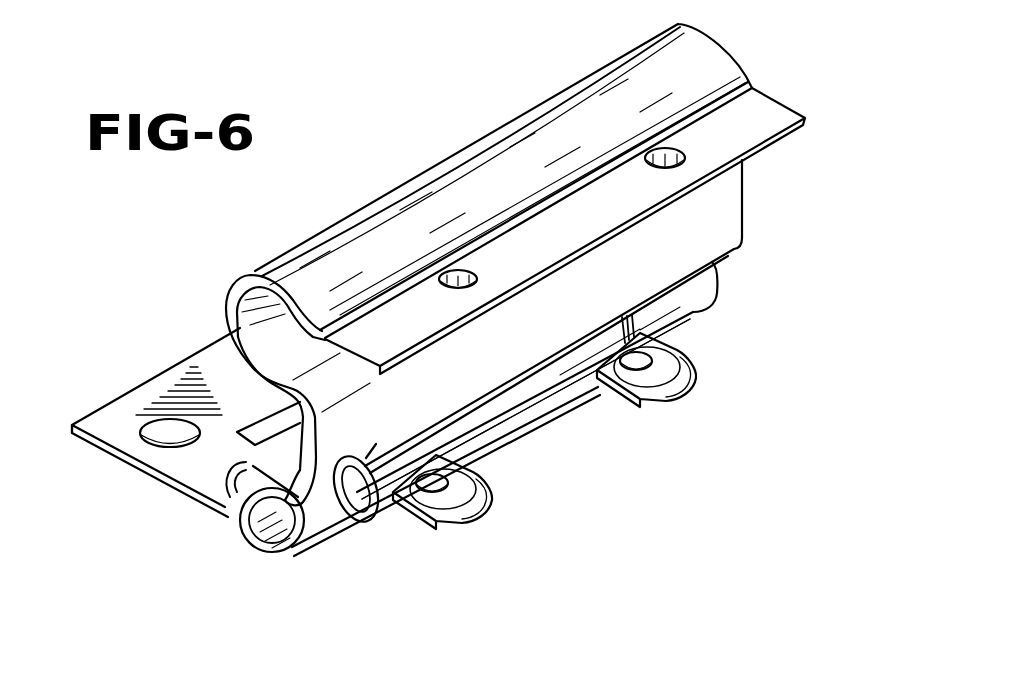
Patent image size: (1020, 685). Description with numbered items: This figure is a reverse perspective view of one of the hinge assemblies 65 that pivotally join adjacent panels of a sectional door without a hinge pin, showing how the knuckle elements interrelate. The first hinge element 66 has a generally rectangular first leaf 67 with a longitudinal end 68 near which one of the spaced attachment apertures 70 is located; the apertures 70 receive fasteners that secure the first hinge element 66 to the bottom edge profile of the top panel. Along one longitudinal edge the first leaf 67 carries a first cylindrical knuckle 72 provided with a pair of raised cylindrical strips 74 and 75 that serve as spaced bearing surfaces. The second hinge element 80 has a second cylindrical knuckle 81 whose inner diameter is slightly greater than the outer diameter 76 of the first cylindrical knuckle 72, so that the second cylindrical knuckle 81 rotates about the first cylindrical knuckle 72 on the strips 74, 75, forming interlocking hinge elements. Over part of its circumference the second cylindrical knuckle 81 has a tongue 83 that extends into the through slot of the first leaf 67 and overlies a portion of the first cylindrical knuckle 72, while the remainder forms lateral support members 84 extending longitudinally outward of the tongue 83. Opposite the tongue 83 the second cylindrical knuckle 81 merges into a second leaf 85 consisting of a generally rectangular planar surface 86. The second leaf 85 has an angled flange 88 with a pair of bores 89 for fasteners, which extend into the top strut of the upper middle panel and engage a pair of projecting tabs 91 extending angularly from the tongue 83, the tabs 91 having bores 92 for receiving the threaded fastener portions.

The hinge assembly 65 is at (612, 517).
The first hinge element 66 is at (125, 466).
The first leaf 67 is at (196, 472).
The longitudinal end 68 is at (80, 440).
The attachment aperture 70 is at (167, 440).
The first cylindrical knuckle 72 is at (308, 520).
The raised cylindrical strip 74 is at (357, 516).
The raised cylindrical strip 75 is at (643, 320).
The outer diameter of the first cylindrical knuckle 76 is at (525, 392).
The second hinge element 80 is at (788, 100).
The second cylindrical knuckle 81 is at (243, 470).
The tongue 83 is at (577, 400).
The lateral support member 84 is at (280, 470).
The second leaf 85 is at (742, 205).
The rectangular surface 86 is at (352, 450).
The flange 88 is at (764, 112).
The bore 89 is at (457, 280).
The projecting tab 91 is at (473, 500).
The bore 92 is at (433, 486).